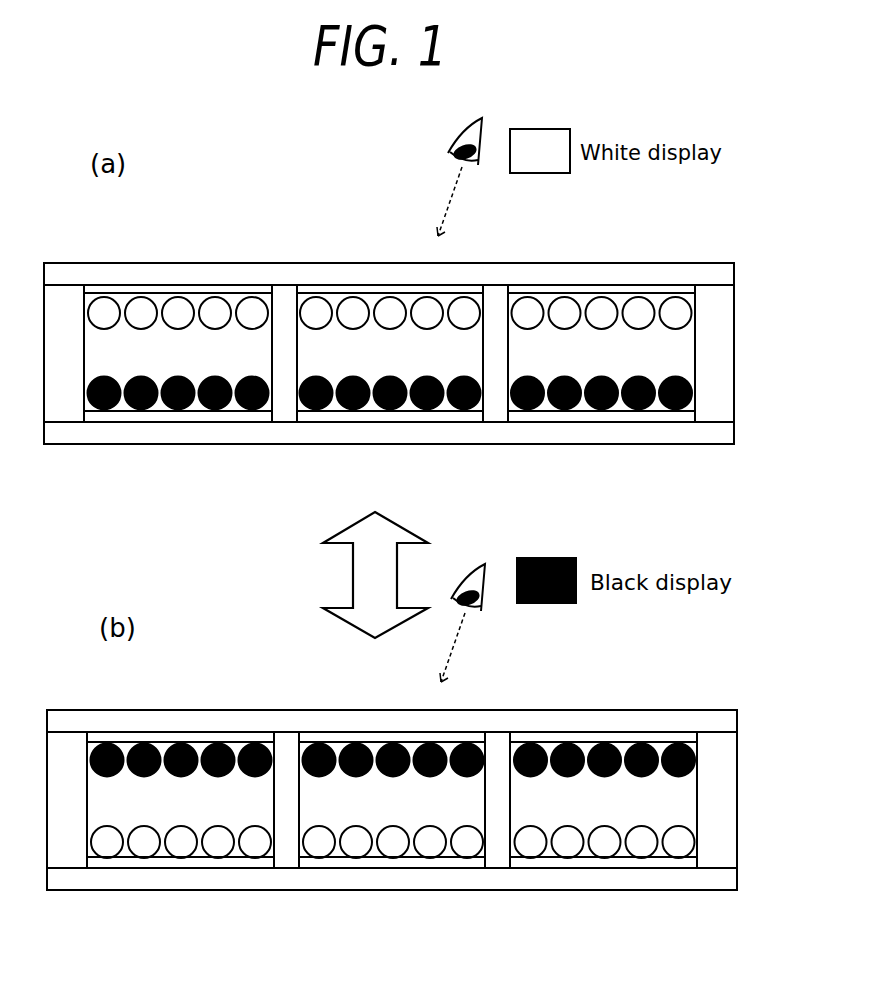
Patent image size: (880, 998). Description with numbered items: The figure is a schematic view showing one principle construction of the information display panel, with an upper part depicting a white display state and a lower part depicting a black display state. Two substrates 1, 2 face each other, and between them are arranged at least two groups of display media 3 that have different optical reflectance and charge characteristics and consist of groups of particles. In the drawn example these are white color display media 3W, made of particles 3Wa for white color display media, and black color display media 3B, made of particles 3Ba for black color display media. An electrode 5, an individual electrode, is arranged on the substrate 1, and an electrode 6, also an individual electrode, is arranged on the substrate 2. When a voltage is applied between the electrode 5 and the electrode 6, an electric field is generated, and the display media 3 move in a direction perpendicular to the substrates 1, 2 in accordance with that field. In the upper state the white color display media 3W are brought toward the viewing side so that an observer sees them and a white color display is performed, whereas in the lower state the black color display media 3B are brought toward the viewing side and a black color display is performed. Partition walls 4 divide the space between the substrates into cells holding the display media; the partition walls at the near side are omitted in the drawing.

The substrate 1 is at (658, 437).
The substrate 2 is at (660, 268).
The display media 3 is at (668, 576).
The white color display media 3W is at (748, 295).
The black color display media 3B is at (652, 577).
The particles for white color display media 3Wa is at (213, 303).
The particles for black color display media 3Ba is at (212, 413).
The partition wall 4 is at (63, 390).
The electrode 5 is at (583, 413).
The electrode 6 is at (583, 292).